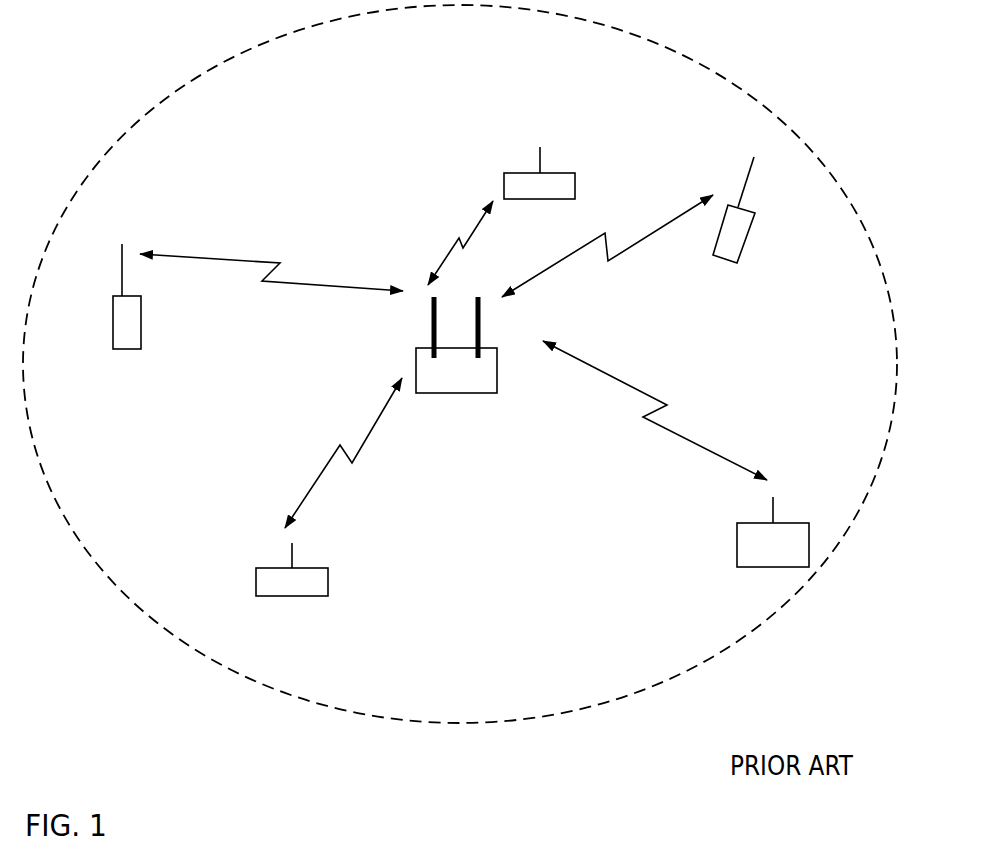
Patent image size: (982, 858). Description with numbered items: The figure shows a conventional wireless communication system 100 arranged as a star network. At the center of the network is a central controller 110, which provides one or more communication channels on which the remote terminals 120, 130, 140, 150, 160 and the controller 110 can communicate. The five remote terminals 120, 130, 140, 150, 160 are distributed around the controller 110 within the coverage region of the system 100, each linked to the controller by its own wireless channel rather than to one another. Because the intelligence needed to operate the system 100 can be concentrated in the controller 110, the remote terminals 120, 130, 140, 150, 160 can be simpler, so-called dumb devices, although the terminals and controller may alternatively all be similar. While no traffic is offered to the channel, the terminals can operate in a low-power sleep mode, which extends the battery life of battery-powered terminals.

The wireless communication system 100 is at (124, 84).
The central controller 110 is at (423, 345).
The remote terminal 120 is at (258, 318).
The remote terminal 130 is at (329, 505).
The remote terminal 140 is at (676, 472).
The remote terminal 150 is at (652, 227).
The remote terminal 160 is at (501, 211).